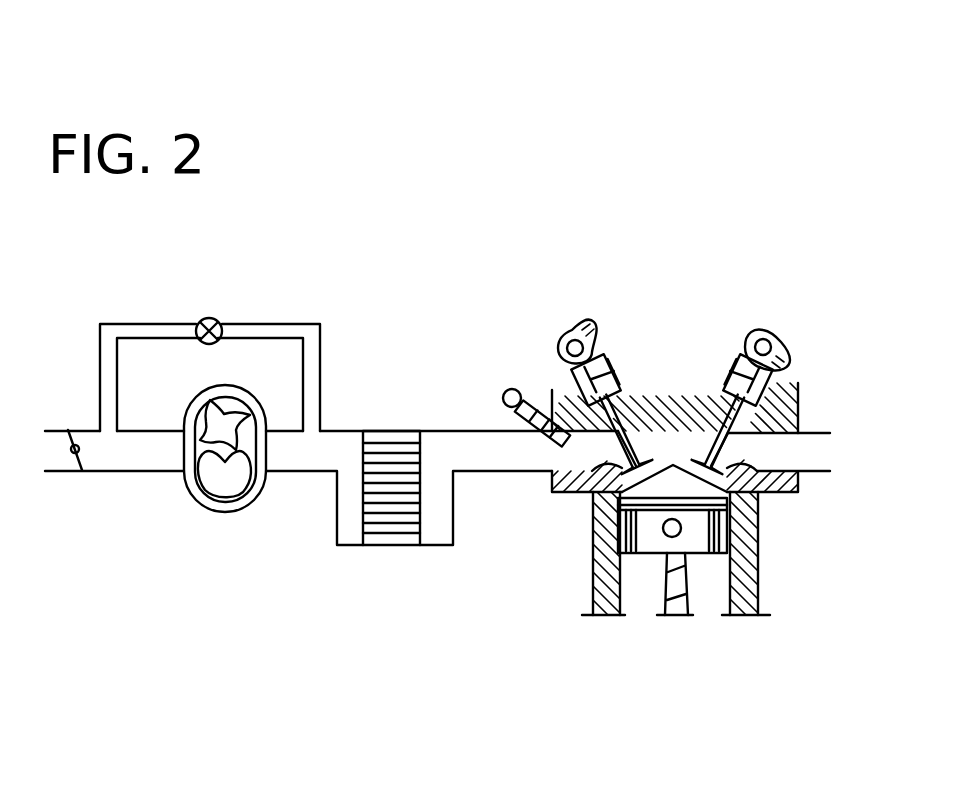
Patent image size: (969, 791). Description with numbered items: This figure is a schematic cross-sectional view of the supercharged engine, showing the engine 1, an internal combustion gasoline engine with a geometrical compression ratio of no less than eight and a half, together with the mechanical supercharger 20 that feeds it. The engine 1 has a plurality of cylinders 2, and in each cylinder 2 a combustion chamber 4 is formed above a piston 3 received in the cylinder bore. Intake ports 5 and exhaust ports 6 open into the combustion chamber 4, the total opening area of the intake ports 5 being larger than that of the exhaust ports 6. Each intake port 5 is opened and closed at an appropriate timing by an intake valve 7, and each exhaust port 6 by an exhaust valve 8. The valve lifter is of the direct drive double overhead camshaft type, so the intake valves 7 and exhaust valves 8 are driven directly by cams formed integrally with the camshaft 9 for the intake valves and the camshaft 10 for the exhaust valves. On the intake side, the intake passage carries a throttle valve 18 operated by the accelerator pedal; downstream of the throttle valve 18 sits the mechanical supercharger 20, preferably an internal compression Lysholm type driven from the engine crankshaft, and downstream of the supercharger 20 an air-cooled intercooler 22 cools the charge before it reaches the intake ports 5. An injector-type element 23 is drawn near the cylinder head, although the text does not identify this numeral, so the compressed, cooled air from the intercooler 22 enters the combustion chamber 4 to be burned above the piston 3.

The engine 1 is at (700, 548).
The cylinder 2 is at (643, 585).
The piston 3 is at (640, 537).
The combustion chamber 4 is at (687, 490).
The intake port 5 is at (580, 490).
The exhaust port 6 is at (762, 497).
The intake valve 7 is at (649, 460).
The exhaust valve 8 is at (700, 458).
The camshaft for the intake valves 9 is at (565, 330).
The camshaft for the exhaust valves 10 is at (770, 328).
The throttle valve 18 is at (75, 472).
The mechanical supercharger 20 is at (227, 513).
The air-cooled intercooler 22 is at (392, 545).
The fuel injector 23 is at (532, 402).